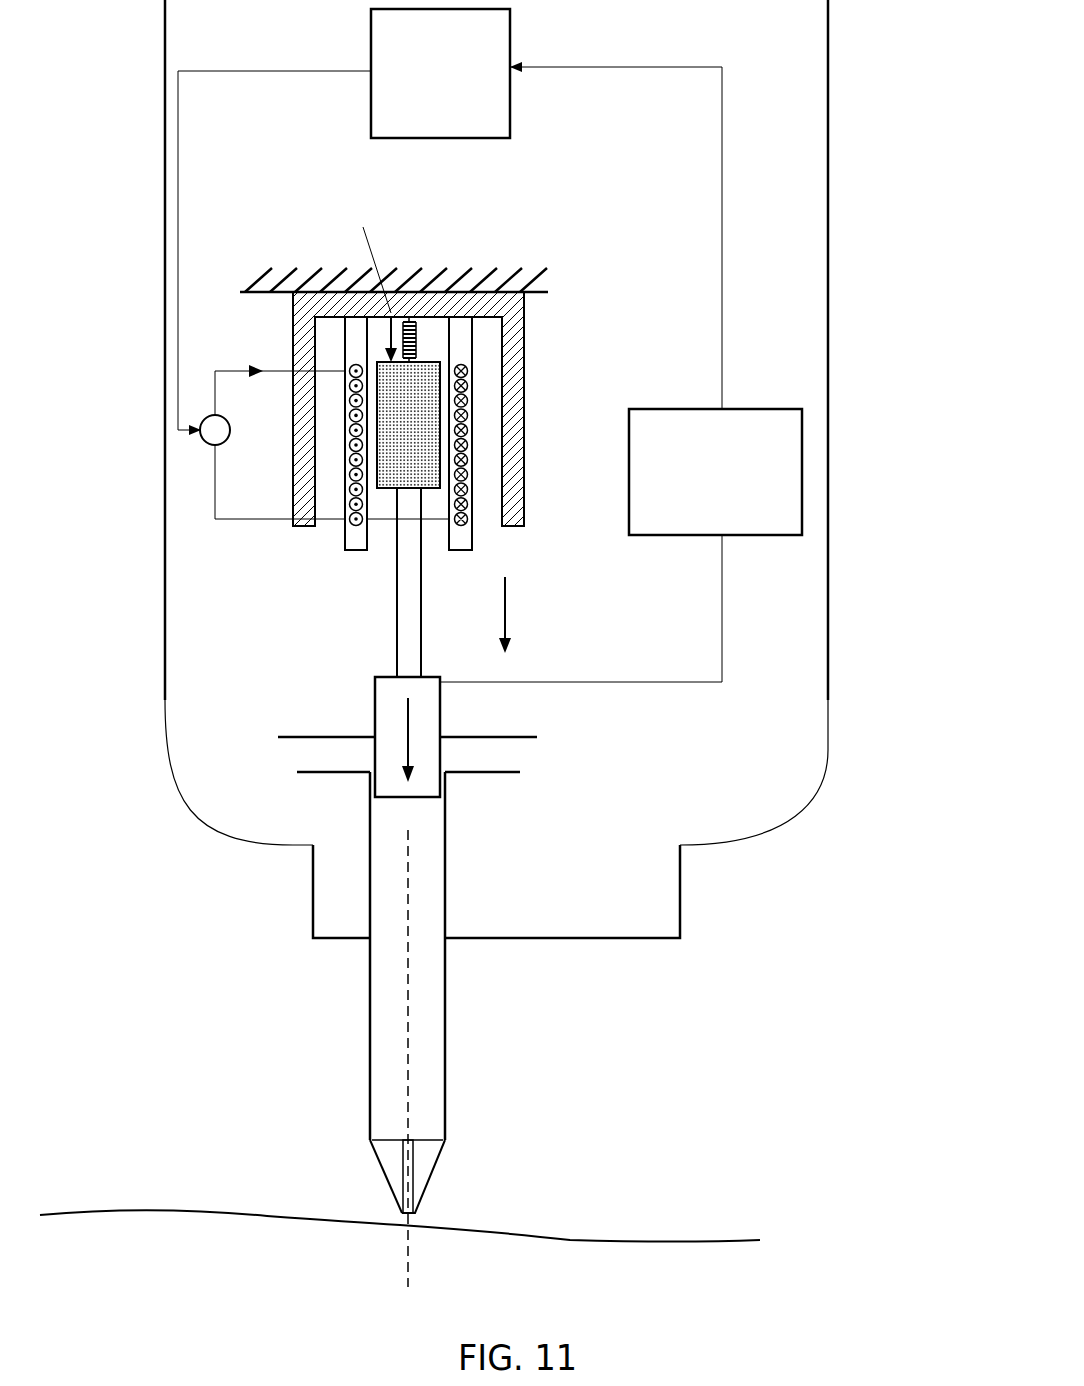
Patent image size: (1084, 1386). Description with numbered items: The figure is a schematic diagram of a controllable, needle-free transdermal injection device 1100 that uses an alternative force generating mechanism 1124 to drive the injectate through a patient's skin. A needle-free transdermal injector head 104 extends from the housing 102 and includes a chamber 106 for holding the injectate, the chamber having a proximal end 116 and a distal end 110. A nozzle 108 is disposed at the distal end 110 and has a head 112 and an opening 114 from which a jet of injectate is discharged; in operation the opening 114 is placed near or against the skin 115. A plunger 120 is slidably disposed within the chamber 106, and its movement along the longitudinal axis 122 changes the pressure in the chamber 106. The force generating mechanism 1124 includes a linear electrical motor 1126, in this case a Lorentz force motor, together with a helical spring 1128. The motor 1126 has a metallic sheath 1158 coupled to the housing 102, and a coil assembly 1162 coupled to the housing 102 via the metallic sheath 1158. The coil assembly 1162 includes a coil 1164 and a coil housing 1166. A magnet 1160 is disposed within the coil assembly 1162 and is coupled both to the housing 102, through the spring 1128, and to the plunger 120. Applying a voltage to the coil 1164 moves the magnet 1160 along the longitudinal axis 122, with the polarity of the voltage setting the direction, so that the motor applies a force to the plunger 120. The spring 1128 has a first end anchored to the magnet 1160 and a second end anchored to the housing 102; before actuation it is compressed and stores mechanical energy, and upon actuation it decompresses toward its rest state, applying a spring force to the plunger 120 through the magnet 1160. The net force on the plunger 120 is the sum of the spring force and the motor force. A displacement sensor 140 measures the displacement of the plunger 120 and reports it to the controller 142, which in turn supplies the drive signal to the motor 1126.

The housing 102 is at (828, 762).
The needle-free transdermal injector head 104 is at (445, 1019).
The chamber 106 is at (430, 982).
The nozzle 108 is at (443, 1143).
The distal end 110 is at (370, 1122).
The head 112 is at (380, 1163).
The opening 114 is at (412, 1215).
The skin 115 is at (270, 1215).
The proximal end 116 is at (373, 800).
The plunger 120 is at (375, 712).
The longitudinal axis 122 is at (410, 1056).
The displacement sensor 140 is at (748, 535).
The controller 142 is at (513, 33).
The controllable, needle-free transdermal injection device 1100 is at (197, 945).
The alternative force generating mechanism 1124 is at (580, 262).
The linear electrical motor 1126 is at (580, 352).
The helical spring 1128 is at (412, 327).
The metallic sheath 1158 is at (525, 345).
The magnet 1160 is at (430, 362).
The coil assembly 1162 is at (409, 469).
The coil 1164 is at (468, 507).
The coil housing 1166 is at (343, 552).